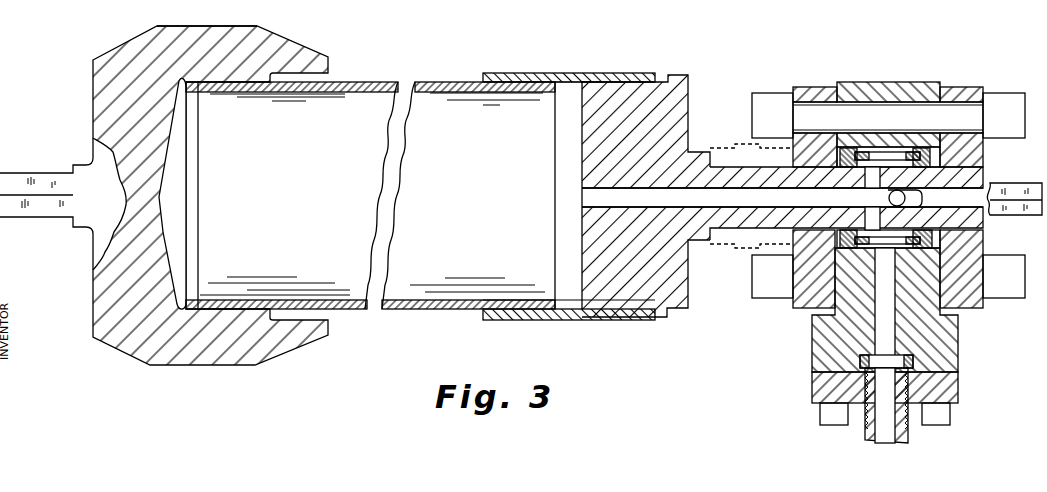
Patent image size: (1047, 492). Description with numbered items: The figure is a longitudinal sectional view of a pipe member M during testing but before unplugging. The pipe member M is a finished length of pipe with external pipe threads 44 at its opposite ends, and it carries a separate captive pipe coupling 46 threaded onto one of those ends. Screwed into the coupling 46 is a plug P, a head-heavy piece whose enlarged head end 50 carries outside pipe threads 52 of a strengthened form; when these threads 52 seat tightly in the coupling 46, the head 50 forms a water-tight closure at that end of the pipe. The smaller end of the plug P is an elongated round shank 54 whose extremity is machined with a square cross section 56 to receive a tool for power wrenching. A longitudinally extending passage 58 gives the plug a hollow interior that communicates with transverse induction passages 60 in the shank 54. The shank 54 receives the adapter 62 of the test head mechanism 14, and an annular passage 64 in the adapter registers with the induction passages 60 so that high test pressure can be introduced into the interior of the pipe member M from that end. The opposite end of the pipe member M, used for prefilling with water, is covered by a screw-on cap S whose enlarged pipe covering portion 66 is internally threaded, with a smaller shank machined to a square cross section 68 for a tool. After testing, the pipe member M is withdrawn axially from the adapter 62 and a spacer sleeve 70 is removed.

The test head mechanism 14 is at (812, 262).
The external pipe threads 44 is at (248, 310).
The pipe coupling 46 is at (575, 73).
The enlarged head end 50 is at (672, 98).
The outside pipe threads 52 is at (664, 322).
The elongated round shank 54 is at (742, 173).
The square cross section 56 is at (1033, 217).
The longitudinally extending passage 58 is at (692, 200).
The transverse induction passages 60 is at (877, 221).
The adapter 62 is at (968, 313).
The annular passage 64 is at (902, 170).
The enlarged pipe covering portion 66 is at (218, 26).
The square cross section 68 is at (58, 208).
The spacer sleeve 70 is at (752, 246).
The pipe member M is at (373, 82).
The plug P is at (782, 177).
The screw-on cap S is at (131, 358).